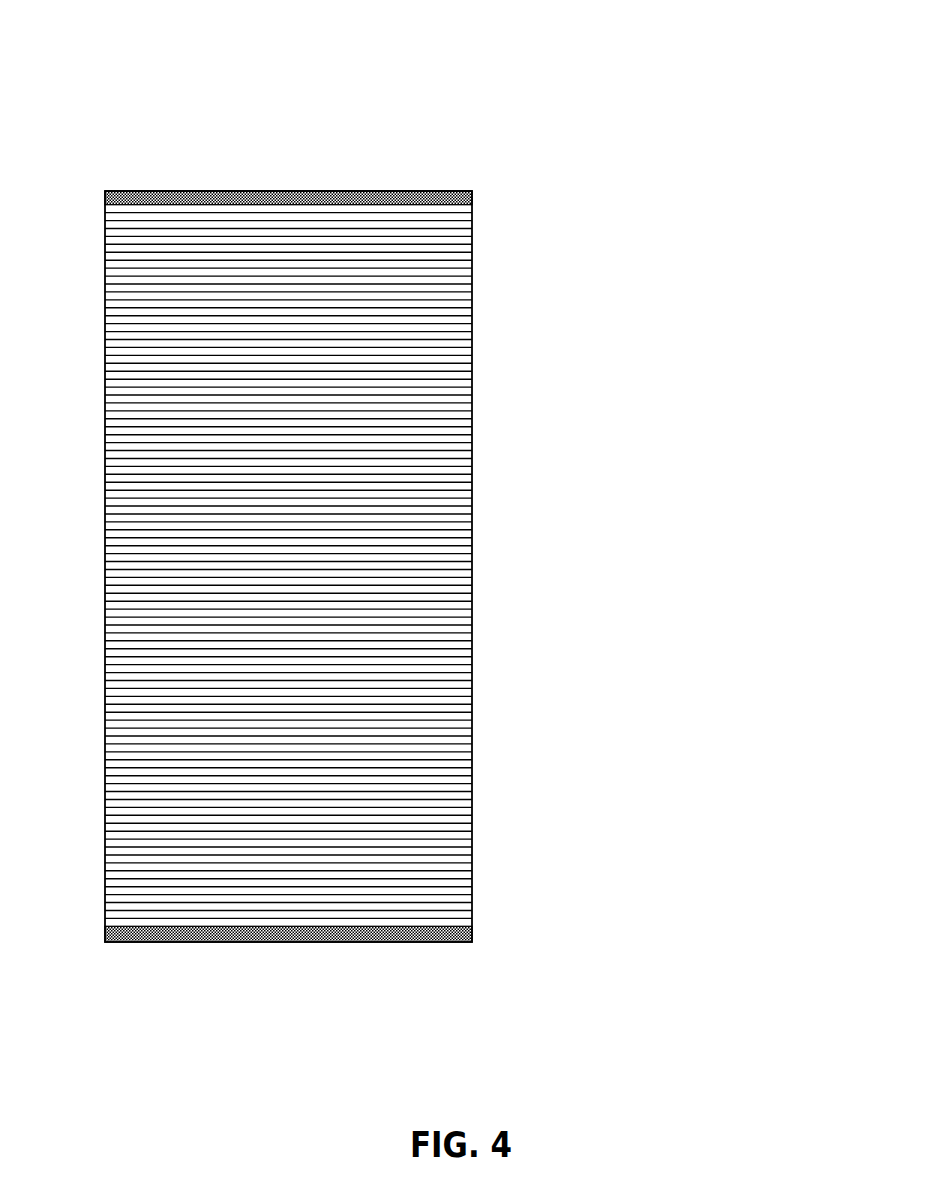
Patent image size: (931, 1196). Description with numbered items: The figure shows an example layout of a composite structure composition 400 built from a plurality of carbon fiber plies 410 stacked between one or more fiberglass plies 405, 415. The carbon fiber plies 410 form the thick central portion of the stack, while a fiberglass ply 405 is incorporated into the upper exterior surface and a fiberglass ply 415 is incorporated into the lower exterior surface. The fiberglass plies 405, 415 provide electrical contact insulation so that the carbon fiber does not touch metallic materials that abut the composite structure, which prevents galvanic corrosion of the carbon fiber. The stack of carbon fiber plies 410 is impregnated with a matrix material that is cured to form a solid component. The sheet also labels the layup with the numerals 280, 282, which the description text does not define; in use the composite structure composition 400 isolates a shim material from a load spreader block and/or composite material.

The composite structure composition 400 is at (118, 52).
The composite panel 280 is at (329, 155).
The composite panel 282 is at (446, 545).
The fiberglass ply 405 is at (680, 155).
The carbon fiber plies 410 is at (680, 462).
The fiberglass ply 415 is at (672, 932).